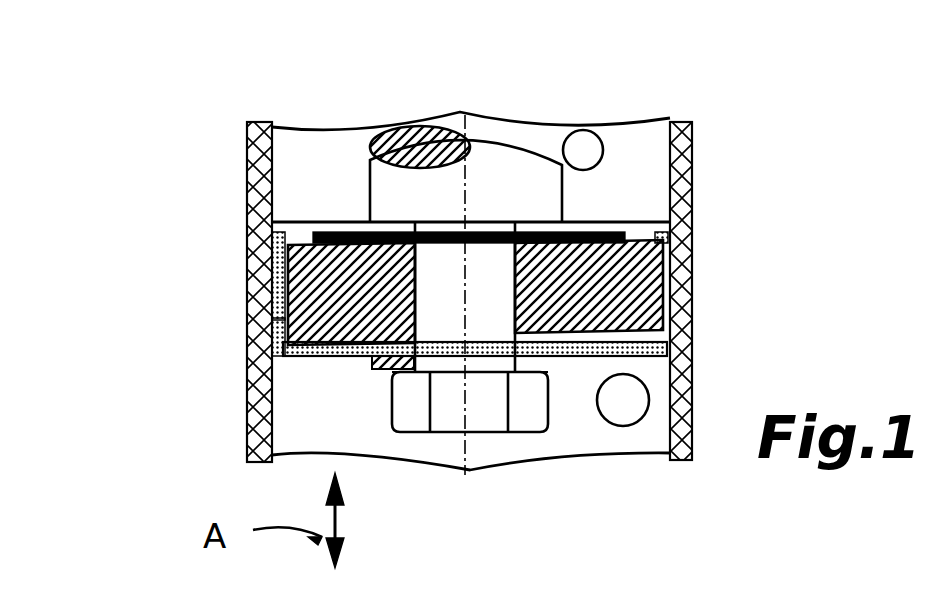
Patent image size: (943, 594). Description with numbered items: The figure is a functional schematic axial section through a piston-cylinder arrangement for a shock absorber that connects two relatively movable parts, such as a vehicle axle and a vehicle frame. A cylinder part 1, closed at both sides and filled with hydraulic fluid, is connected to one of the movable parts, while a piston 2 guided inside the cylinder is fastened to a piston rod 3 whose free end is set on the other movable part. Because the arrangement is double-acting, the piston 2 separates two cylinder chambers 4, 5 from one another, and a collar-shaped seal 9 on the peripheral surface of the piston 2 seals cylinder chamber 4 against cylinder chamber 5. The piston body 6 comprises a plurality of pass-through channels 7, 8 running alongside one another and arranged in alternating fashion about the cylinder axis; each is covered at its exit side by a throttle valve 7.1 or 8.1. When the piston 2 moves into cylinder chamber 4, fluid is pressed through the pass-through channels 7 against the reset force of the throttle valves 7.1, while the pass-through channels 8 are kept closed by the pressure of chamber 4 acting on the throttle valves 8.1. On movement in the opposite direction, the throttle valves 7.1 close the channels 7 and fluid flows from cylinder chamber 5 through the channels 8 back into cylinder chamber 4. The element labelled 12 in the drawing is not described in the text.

The cylinder part 1 is at (692, 152).
The piston 2 is at (604, 210).
The piston rod 3 is at (517, 150).
The cylinder chamber 4 is at (583, 150).
The cylinder chamber 5 is at (623, 400).
The piston body 6 is at (660, 272).
The pass-through channel 7 is at (607, 302).
The throttle valve 7.1 is at (592, 360).
The pass-through channel 8 is at (332, 286).
The throttle valve 8.1 is at (334, 235).
The collar-shaped seal 9 is at (255, 323).
The sleeve 12 is at (284, 252).